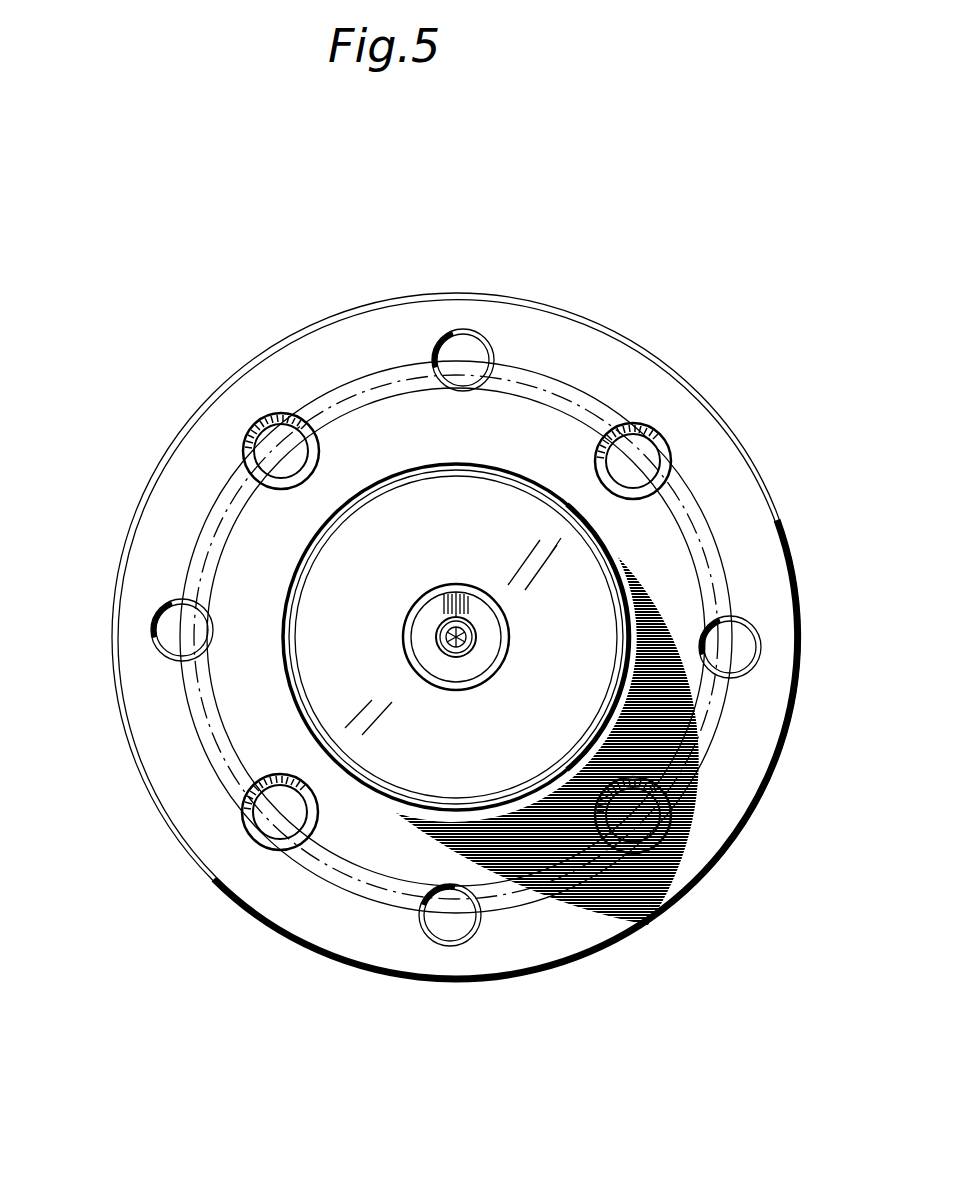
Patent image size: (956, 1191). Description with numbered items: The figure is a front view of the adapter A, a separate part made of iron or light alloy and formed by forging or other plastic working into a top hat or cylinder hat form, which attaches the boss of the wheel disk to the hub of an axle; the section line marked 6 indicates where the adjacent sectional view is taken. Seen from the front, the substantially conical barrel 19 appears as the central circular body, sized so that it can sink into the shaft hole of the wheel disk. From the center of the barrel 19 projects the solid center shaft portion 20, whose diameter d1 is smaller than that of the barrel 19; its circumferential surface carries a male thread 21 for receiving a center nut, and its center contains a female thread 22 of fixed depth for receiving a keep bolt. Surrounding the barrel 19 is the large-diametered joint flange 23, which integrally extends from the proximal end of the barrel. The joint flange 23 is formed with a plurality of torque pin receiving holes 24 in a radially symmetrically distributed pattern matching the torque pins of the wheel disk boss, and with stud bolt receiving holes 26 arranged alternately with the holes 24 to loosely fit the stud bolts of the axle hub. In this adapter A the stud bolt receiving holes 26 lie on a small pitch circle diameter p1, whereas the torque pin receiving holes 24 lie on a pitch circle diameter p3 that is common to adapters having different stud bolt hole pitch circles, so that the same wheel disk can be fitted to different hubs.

The barrel 19 is at (304, 681).
The center shaft portion 20 is at (478, 655).
The male thread 21 is at (456, 622).
The female thread 22 is at (500, 628).
The joint flange 23 is at (746, 766).
The torque pin receiving holes 24 is at (486, 352).
The stud bolt receiving holes 26 is at (310, 449).
The adapter A is at (778, 513).
The diameter of the center shaft portion d1 is at (411, 640).
The small pitch circle diameter p1 is at (632, 814).
The pitch circle diameter of the torque pin receiving holes p3 is at (815, 648).
The section line 6- 6 is at (470, 225).